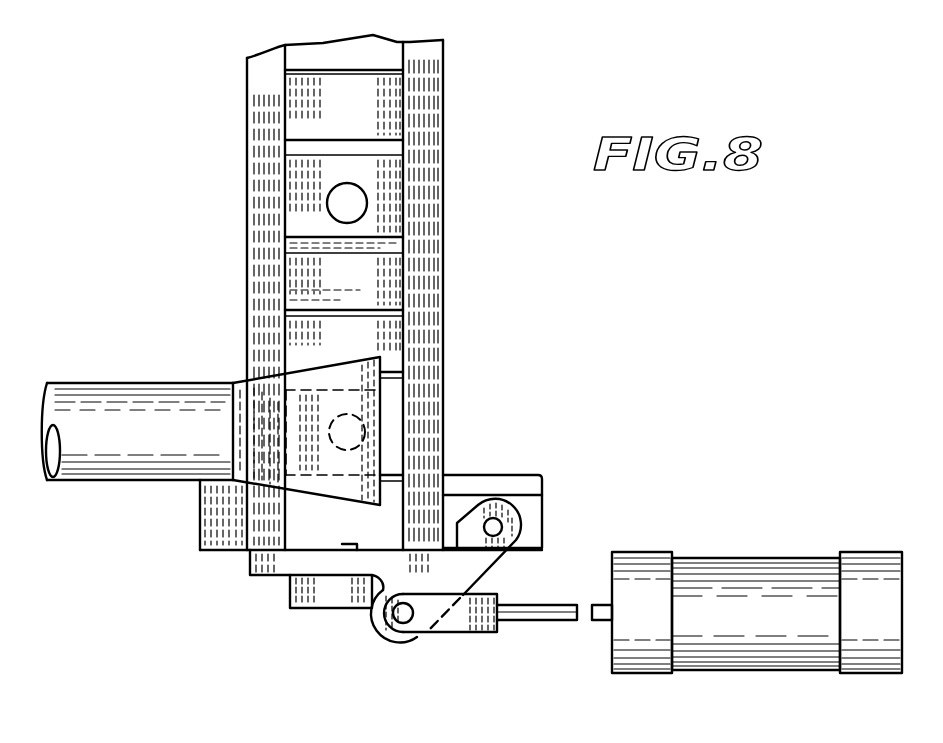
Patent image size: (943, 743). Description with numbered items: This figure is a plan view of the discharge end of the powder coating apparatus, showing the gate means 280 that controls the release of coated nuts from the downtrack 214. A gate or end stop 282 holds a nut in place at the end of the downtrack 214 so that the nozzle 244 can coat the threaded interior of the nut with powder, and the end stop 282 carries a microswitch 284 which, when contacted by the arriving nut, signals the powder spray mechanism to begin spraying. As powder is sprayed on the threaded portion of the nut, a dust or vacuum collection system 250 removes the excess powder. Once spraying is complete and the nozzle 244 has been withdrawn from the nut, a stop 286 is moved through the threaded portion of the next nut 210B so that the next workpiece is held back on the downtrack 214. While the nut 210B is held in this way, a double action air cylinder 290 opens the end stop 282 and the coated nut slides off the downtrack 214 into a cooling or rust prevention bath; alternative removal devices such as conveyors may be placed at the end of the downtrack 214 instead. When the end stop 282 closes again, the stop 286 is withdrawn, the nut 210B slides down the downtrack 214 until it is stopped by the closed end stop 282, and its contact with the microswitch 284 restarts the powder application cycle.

The downtrack 214 is at (443, 132).
The nut 210B is at (392, 196).
The stop 286 is at (328, 196).
The dust or vacuum collection system 250 is at (108, 402).
The nozzle 244 is at (362, 428).
The gate means 280 is at (494, 463).
The end stop 282 is at (478, 556).
The microswitch 284 is at (290, 596).
The double action air cylinder 290 is at (731, 568).